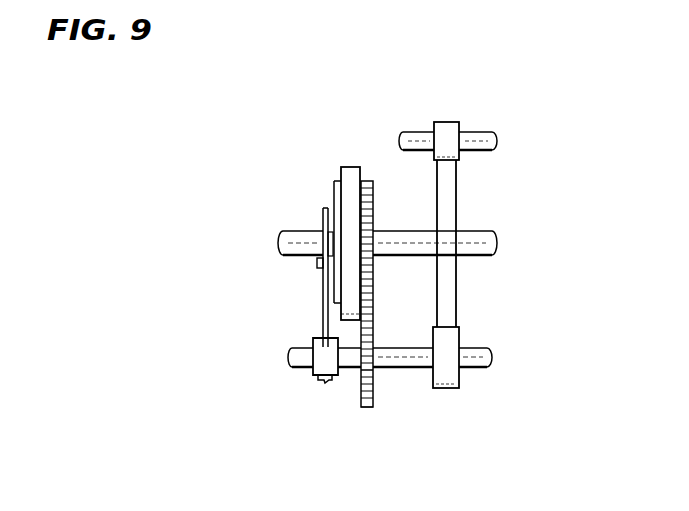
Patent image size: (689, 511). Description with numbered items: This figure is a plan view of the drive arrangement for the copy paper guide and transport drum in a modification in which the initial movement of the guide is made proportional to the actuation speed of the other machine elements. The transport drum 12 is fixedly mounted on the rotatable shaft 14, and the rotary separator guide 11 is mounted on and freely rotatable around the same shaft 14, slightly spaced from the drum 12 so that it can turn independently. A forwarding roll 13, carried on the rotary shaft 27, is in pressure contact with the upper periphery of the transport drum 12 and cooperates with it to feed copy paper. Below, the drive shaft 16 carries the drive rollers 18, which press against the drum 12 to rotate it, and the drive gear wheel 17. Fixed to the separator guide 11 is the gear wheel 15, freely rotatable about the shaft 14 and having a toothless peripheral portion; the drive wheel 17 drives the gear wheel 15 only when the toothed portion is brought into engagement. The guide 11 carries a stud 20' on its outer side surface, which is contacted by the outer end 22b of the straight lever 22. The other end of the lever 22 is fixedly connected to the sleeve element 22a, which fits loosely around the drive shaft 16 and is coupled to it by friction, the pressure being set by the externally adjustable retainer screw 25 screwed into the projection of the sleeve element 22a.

The rotary separator guide 11 is at (353, 172).
The transport drum 12 is at (452, 210).
The forwarding roll 13 is at (448, 127).
The rotatable shaft 14 is at (412, 240).
The gear wheel 15 is at (372, 283).
The drive shaft 16 is at (473, 352).
The drive gear wheel 17 is at (363, 388).
The drive rollers 18 is at (445, 373).
The stud 20' is at (277, 277).
The straight lever 22 is at (323, 302).
The sleeve element 22a is at (317, 367).
The outer end of lever 22b is at (328, 240).
The retainer screw 25 is at (323, 383).
The rotary shaft 27 is at (487, 135).